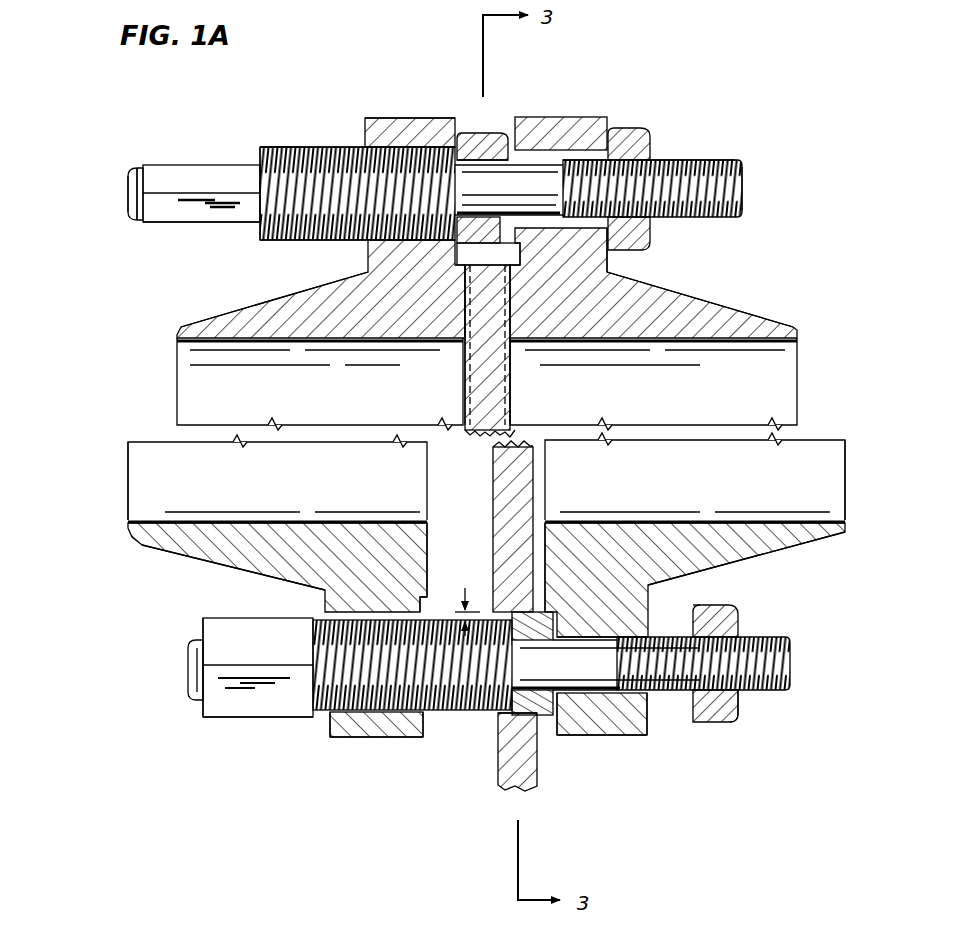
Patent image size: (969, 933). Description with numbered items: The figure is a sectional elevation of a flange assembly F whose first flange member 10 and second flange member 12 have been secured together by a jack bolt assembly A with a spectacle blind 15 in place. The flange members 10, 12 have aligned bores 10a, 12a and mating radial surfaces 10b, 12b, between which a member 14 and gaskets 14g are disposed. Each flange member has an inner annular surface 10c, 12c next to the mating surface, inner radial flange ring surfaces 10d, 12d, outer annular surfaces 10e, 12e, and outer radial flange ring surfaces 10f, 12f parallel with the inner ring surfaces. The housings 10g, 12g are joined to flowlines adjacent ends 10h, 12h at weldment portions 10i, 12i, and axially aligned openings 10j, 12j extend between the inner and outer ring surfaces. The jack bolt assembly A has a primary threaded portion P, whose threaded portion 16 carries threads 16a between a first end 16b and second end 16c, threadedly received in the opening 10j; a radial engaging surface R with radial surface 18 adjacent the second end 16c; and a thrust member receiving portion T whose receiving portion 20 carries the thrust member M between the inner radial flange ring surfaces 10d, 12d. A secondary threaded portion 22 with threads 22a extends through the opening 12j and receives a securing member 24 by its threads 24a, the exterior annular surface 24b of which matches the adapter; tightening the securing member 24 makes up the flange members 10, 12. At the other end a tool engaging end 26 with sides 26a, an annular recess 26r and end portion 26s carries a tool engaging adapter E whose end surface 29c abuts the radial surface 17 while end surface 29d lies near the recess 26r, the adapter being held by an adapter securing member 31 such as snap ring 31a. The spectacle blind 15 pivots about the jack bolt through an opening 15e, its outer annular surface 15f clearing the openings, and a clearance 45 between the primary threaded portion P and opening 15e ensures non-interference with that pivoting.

The first flange member 10 is at (261, 438).
The bore 10a is at (128, 520).
The mating radial surface 10b is at (430, 555).
The inner annular surface 10c is at (425, 600).
The inner radial flange ring surface 10d is at (425, 730).
The outer annular surface 10e is at (370, 737).
The outer radial flange ring surface 10f is at (330, 728).
The housing 10g is at (180, 560).
The end 10h is at (128, 475).
The weldment portion 10i is at (176, 336).
The opening 10j is at (438, 155).
The second flange member 12 is at (726, 432).
The bore 12a is at (845, 520).
The mating radial surface 12b is at (545, 550).
The inner annular surface 12c is at (575, 640).
The inner radial flange ring surface 12d is at (553, 705).
The outer annular surface 12e is at (640, 738).
The outer radial flange ring surface 12f is at (647, 722).
The housing 12g is at (798, 555).
The end 12h is at (845, 462).
The weldment portion 12i is at (798, 333).
The opening 12j is at (622, 160).
The member 14 is at (489, 541).
The gaskets 14g is at (465, 392).
The spectacle blind 15 is at (487, 505).
The opening 15e is at (497, 712).
The outer annular surface 15f is at (485, 258).
The threaded portion 16 is at (360, 173).
The threads 16a is at (322, 205).
The first end 16b is at (275, 160).
The second end 16c is at (462, 150).
The radial surface 17 is at (260, 160).
The radial surface 18 is at (540, 720).
The receiving portion 20 is at (610, 690).
The secondary threaded portion 22 is at (672, 433).
The threads 22a is at (700, 160).
The securing member 24 is at (715, 418).
The threads 24a is at (735, 690).
The exterior annular surface 24b is at (710, 605).
The tool engaging end 26 is at (146, 186).
The sides 26a is at (232, 212).
The annular recess 26r is at (137, 165).
The end portion 26s is at (128, 190).
The end surface 29c is at (307, 691).
The end surface 29d is at (205, 715).
The adapter securing member 31 is at (207, 667).
The snap ring 31a is at (200, 630).
The clearance 45 is at (466, 600).
The jack bolt assembly A is at (765, 140).
The tool engaging adapter E is at (250, 720).
The flange assembly F is at (390, 97).
The thrust member M is at (530, 117).
The primary threaded portion P is at (308, 145).
The radial engaging surface R is at (490, 148).
The thrust member receiving portion T is at (545, 182).